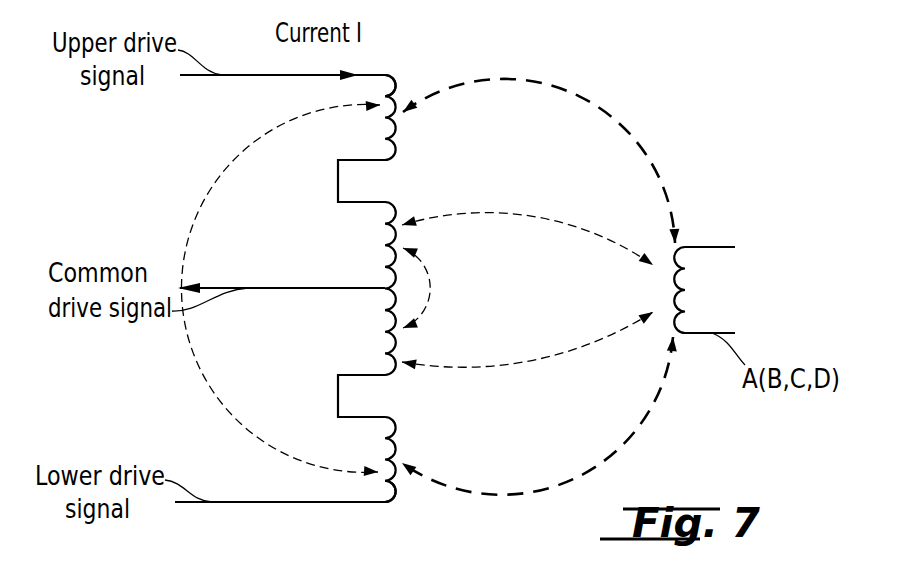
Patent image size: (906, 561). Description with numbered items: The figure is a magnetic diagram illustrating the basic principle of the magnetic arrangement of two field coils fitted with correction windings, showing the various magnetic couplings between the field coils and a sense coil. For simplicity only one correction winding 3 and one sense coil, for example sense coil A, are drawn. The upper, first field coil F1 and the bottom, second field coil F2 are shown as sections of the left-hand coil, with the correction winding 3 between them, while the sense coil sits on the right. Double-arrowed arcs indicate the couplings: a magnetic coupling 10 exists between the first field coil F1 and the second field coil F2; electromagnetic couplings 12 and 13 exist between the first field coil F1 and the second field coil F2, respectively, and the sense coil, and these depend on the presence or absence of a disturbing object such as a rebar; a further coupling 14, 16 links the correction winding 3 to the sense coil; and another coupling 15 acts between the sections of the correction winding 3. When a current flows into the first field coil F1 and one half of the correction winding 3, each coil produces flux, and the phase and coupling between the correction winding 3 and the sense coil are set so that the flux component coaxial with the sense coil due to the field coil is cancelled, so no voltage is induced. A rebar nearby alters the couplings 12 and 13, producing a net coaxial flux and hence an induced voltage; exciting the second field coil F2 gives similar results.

The correction winding 3 is at (386, 246).
The magnetic coupling 10 is at (218, 230).
The electromagnetic coupling 12 is at (585, 98).
The electromagnetic coupling 13 is at (665, 392).
The coupling 14 is at (428, 221).
The coupling 15 is at (430, 279).
The coupling 16 is at (429, 369).
The first field coil F1 is at (397, 79).
The second field coil F2 is at (396, 500).